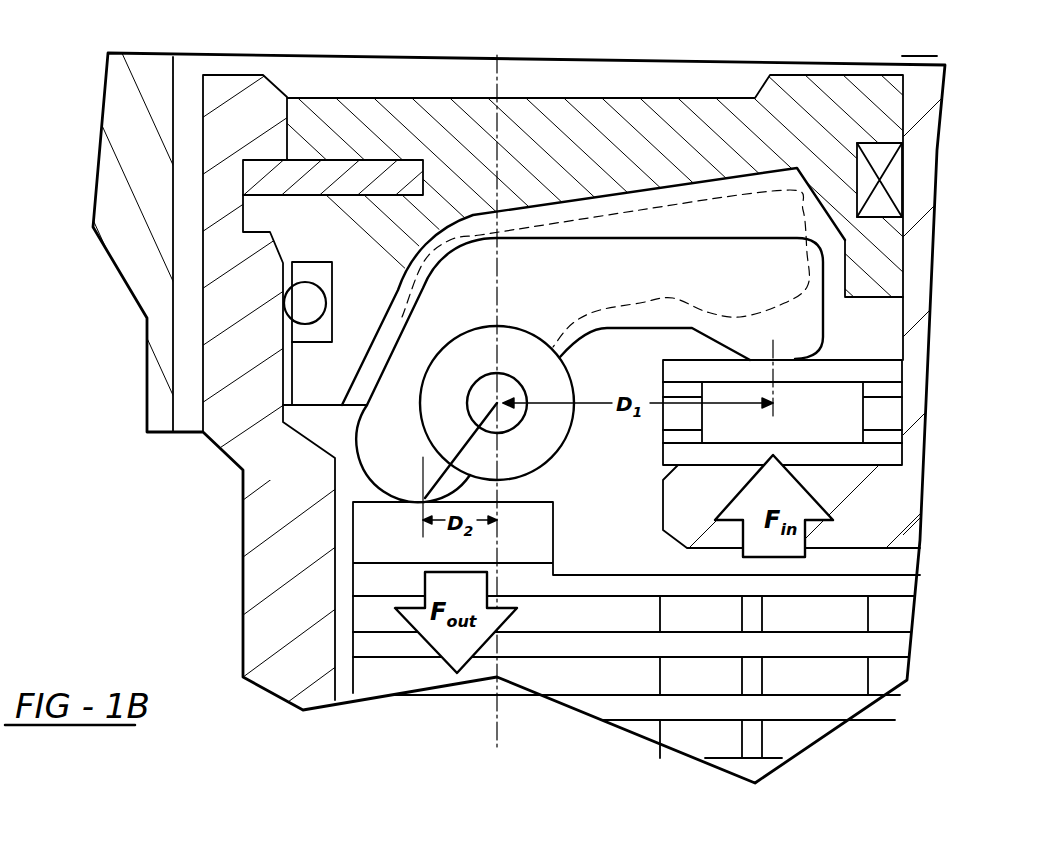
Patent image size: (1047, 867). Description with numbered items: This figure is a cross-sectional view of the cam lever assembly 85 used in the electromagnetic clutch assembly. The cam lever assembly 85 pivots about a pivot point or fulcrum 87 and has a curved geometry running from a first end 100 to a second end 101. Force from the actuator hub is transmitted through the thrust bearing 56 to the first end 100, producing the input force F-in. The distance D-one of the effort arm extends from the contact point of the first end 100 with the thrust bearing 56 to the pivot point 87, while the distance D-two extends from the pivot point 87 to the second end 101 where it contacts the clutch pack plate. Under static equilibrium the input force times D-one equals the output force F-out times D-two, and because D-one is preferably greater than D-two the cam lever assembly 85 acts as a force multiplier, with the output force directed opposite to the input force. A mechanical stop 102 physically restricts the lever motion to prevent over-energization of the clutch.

The mechanical stop 102 is at (612, 143).
The second end 101 is at (395, 473).
The pivot point 87 is at (503, 408).
The first end 100 is at (793, 340).
The thrust bearing 56 is at (837, 410).
The cam lever assembly 85 is at (657, 775).